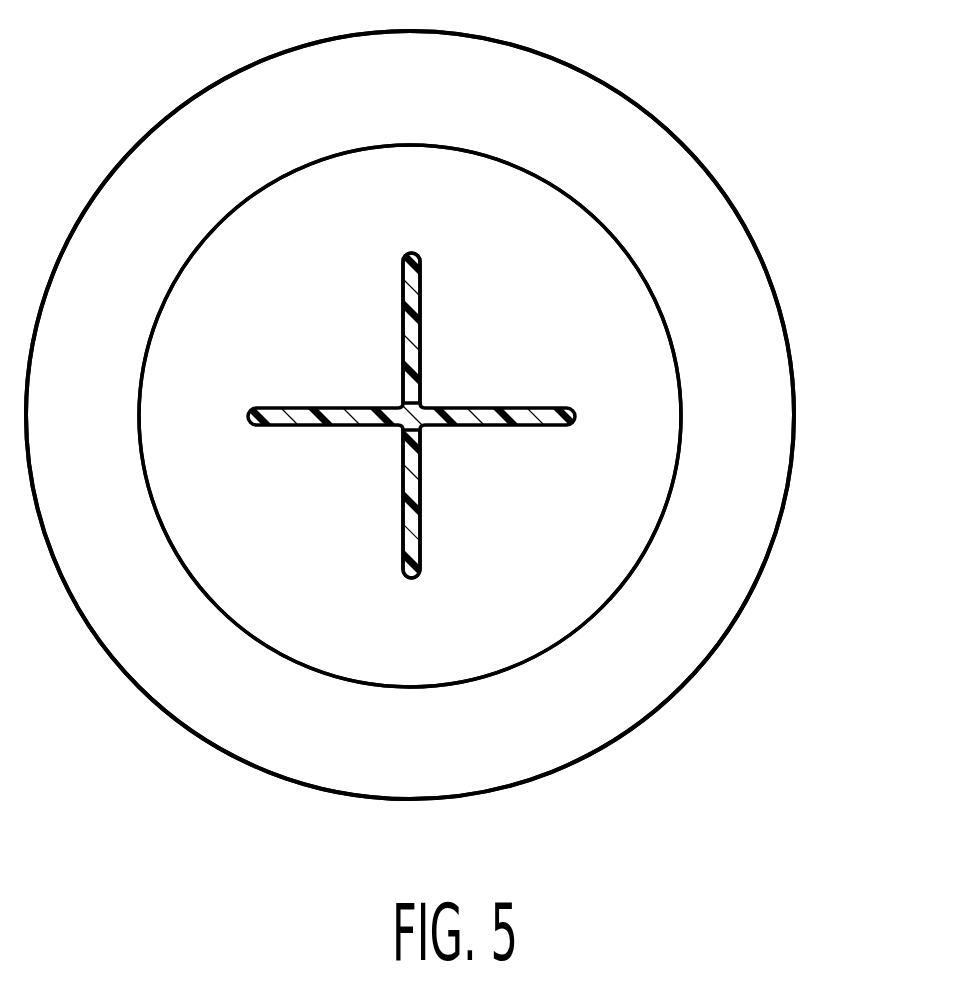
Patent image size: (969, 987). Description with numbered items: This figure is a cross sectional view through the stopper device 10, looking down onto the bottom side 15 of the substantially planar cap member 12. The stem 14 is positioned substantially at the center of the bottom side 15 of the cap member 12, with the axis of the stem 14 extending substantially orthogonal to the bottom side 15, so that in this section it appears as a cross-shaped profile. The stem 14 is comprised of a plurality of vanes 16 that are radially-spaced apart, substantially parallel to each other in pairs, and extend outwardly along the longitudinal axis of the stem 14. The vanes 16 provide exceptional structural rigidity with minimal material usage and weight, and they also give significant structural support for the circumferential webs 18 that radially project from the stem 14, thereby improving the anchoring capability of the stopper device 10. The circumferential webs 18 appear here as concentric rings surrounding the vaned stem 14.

The stopper device 10 is at (758, 121).
The cap member 12 is at (628, 97).
The stem 14 is at (350, 428).
The bottom side 15 is at (748, 488).
The vanes 16 is at (418, 530).
The circumferential webs 18 is at (655, 360).